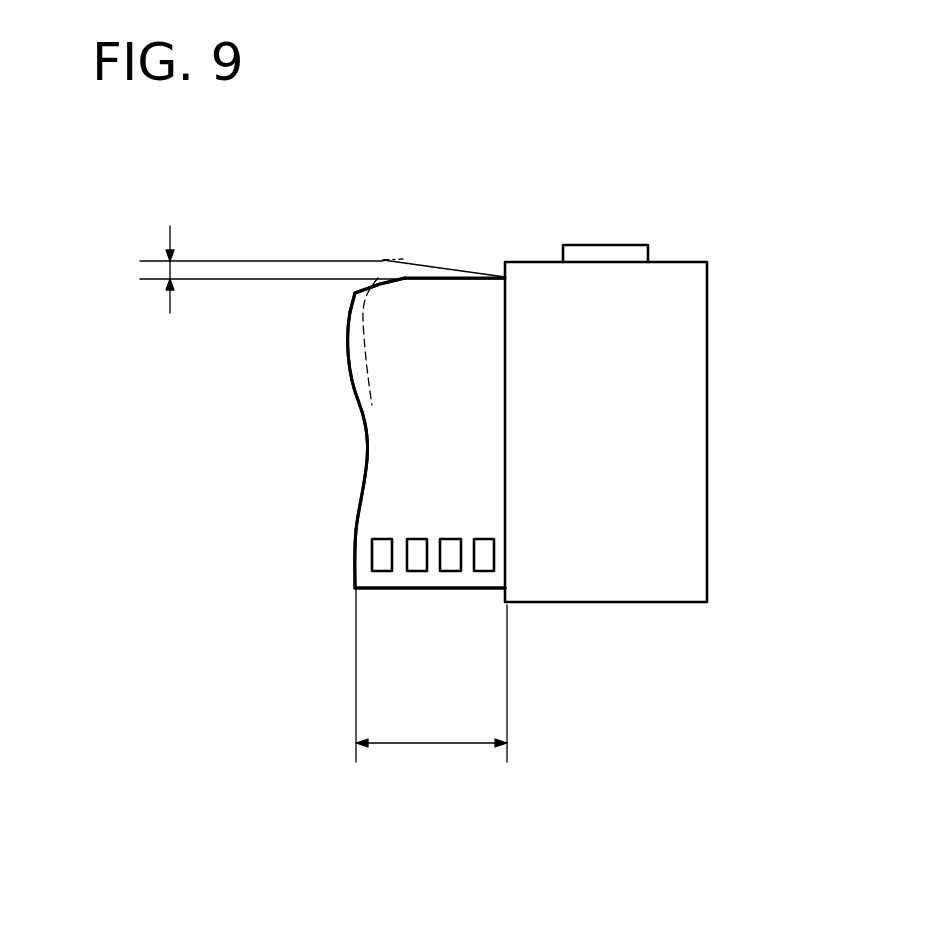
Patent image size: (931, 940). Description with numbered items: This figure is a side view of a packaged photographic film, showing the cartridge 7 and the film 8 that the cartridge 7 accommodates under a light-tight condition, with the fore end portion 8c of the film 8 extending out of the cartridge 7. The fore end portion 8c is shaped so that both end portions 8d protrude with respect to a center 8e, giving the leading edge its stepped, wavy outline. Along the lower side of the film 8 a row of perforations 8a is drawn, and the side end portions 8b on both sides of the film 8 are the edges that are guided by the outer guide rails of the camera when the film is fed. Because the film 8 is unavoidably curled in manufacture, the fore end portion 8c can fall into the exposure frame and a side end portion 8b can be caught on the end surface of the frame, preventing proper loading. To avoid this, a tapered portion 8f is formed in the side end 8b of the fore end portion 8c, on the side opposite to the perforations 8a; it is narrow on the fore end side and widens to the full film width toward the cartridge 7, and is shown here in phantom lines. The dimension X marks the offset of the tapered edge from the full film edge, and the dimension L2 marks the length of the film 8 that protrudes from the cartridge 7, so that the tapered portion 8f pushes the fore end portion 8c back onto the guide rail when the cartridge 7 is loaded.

The cartridge 7 is at (682, 320).
The film 8 is at (372, 503).
The perforations 8a is at (380, 552).
The side end portion 8b is at (423, 277).
The fore end portion 8c is at (397, 423).
The end portions 8d is at (347, 312).
The center 8e is at (368, 458).
The tapered portion 8f is at (378, 278).
The offset dimension X is at (150, 273).
The length dimension L2 is at (431, 687).